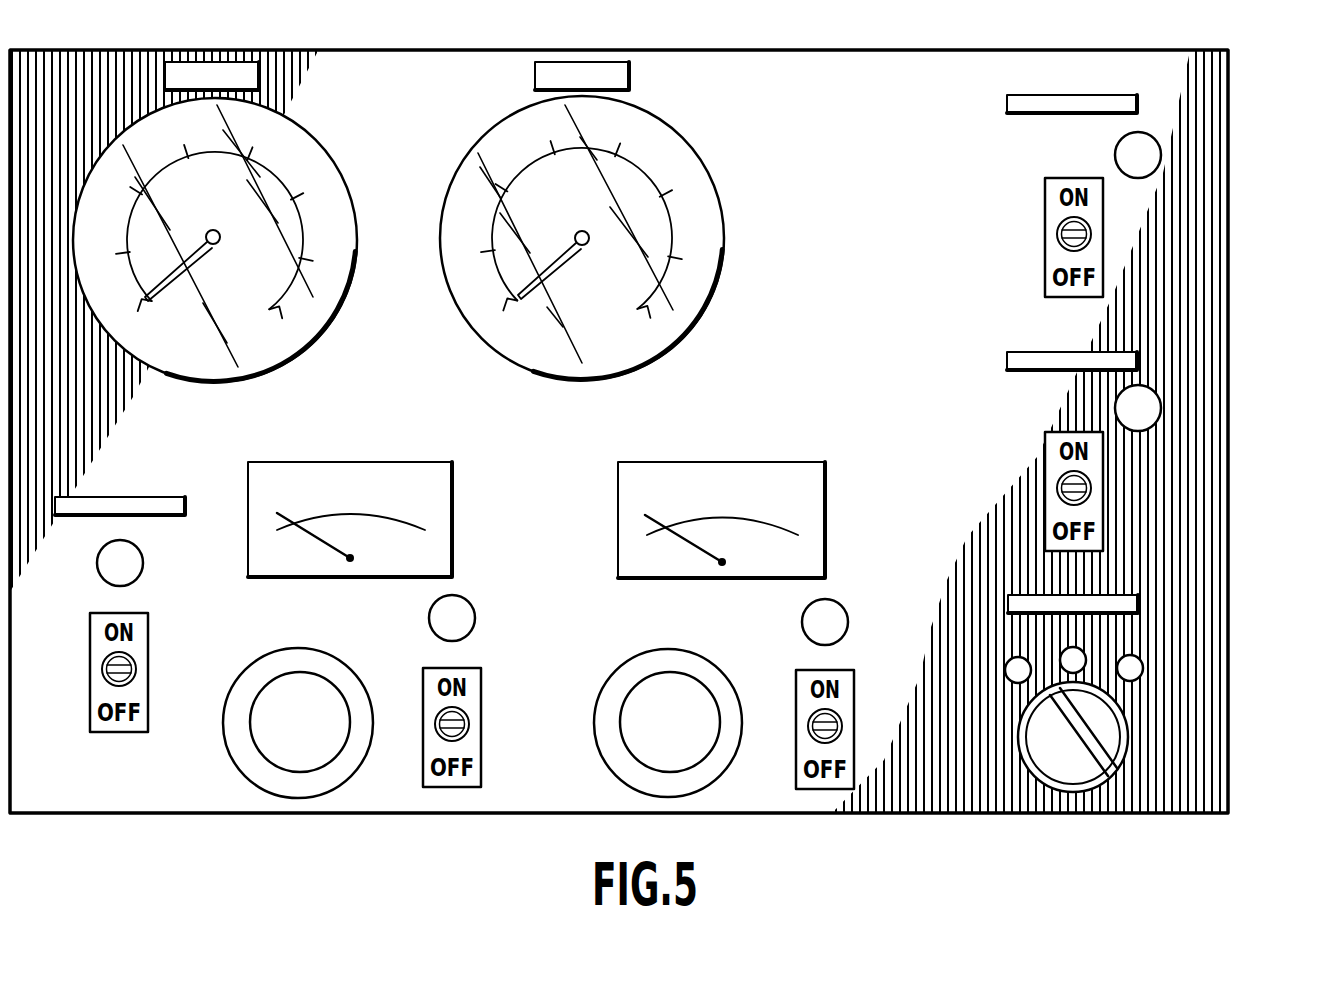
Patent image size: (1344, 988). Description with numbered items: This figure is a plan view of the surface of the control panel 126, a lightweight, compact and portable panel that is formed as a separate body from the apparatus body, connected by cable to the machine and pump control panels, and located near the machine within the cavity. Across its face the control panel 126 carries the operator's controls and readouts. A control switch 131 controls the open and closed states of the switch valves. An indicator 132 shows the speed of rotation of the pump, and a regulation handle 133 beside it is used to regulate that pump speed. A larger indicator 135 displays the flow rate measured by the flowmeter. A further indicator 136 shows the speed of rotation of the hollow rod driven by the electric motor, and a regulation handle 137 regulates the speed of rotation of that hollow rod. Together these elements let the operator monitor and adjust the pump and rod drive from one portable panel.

The control panel 126 is at (1262, 144).
The control switch 131 is at (1102, 720).
The indicator 132 is at (440, 480).
The regulation handle 133 is at (280, 693).
The indicator 135 is at (325, 158).
The indicator 136 is at (796, 476).
The regulation handle 137 is at (640, 690).